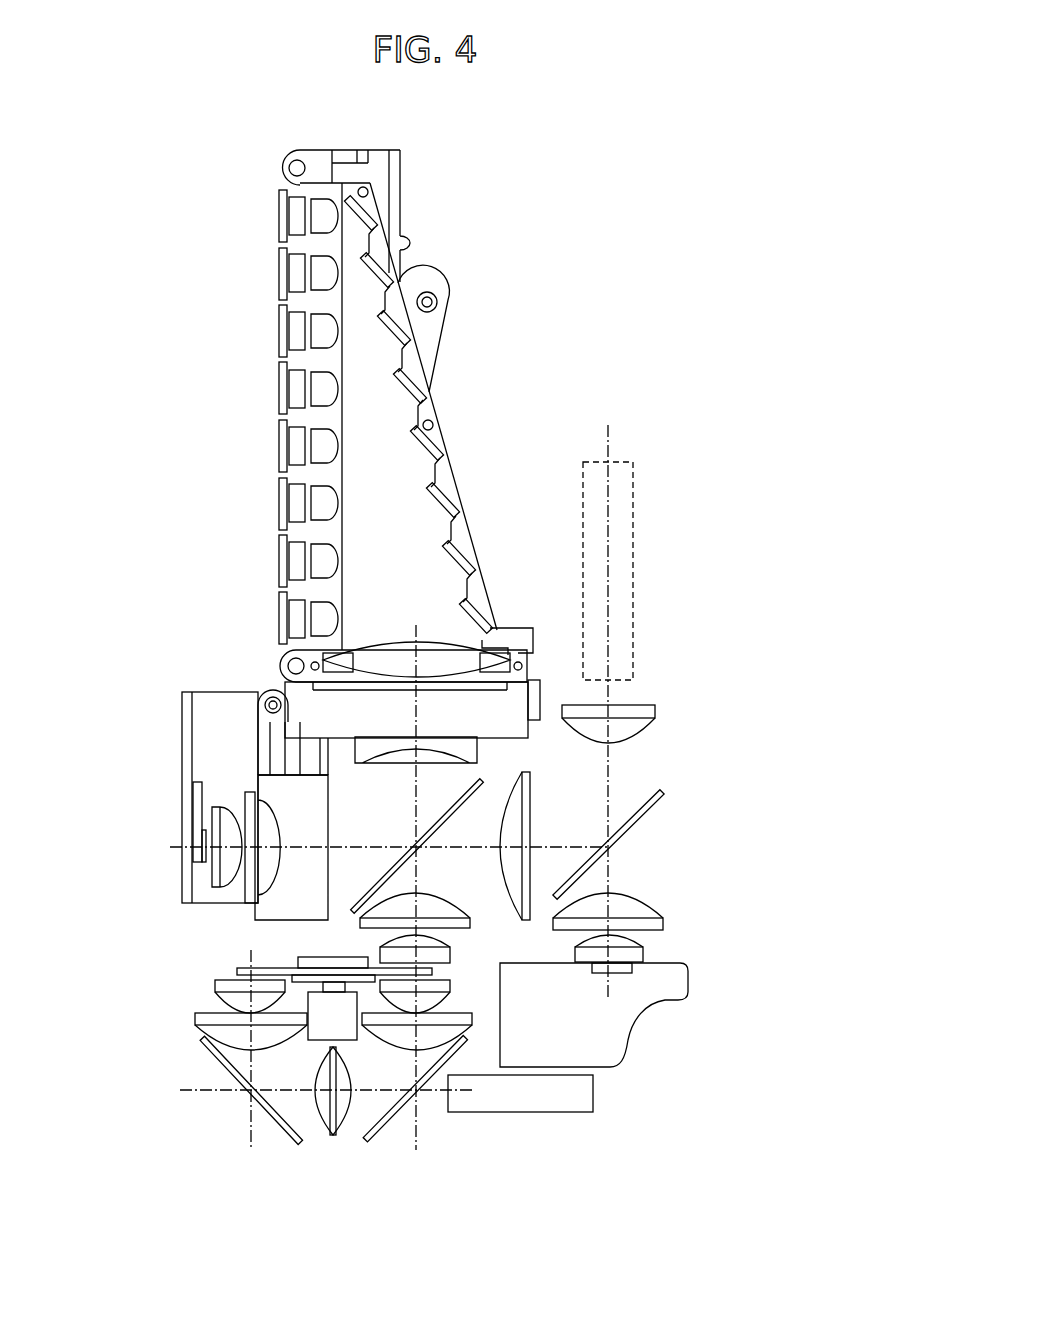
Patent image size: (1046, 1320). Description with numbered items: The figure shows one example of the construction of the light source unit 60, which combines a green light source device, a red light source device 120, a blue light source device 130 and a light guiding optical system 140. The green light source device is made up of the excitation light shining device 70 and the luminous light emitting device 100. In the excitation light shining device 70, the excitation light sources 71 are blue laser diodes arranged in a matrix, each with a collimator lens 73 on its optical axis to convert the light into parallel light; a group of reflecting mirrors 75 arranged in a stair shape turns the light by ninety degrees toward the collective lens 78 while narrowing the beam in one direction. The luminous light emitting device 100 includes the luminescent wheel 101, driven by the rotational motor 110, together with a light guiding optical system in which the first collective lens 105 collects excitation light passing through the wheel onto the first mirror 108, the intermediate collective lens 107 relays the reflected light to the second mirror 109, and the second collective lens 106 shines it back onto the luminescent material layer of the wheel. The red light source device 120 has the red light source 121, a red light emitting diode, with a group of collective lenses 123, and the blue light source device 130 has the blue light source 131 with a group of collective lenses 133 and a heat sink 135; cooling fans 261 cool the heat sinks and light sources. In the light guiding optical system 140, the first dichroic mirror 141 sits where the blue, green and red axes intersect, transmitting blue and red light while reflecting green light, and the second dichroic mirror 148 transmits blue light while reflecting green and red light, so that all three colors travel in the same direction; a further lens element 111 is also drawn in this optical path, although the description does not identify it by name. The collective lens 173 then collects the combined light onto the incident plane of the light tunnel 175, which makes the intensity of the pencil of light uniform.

The excitation light shining device 70 is at (256, 243).
The collimator lens 73 is at (300, 330).
The excitation light source 71 is at (288, 388).
The reflecting mirror 75 is at (420, 447).
The collective lens 78 is at (440, 662).
The light source unit 60 is at (577, 370).
The light tunnel 175 is at (622, 603).
The collective lens 173 is at (625, 730).
The second dichroic mirror 148 is at (623, 835).
The group of collective lenses 133 is at (637, 897).
The light guiding optical system 140 is at (682, 930).
The blue light source 131 is at (613, 973).
The blue light source device 130 is at (607, 982).
The heat sink 135 is at (567, 1022).
The cooling fan 261 is at (535, 1090).
The lens 111 is at (462, 932).
The first dichroic mirror 141 is at (412, 840).
The group of collective lenses 123 is at (237, 803).
The red light source 121 is at (202, 857).
The red light source device 120 is at (193, 872).
The luminescent wheel 101 is at (247, 973).
The second collective lens 106 is at (203, 1028).
The first collective lens 105 is at (428, 1048).
The luminous light emitting device 100 is at (322, 1043).
The rotational motor 110 is at (313, 1043).
The intermediate collective lens 107 is at (332, 1127).
The first mirror 108 is at (385, 1118).
The second mirror 109 is at (223, 1065).